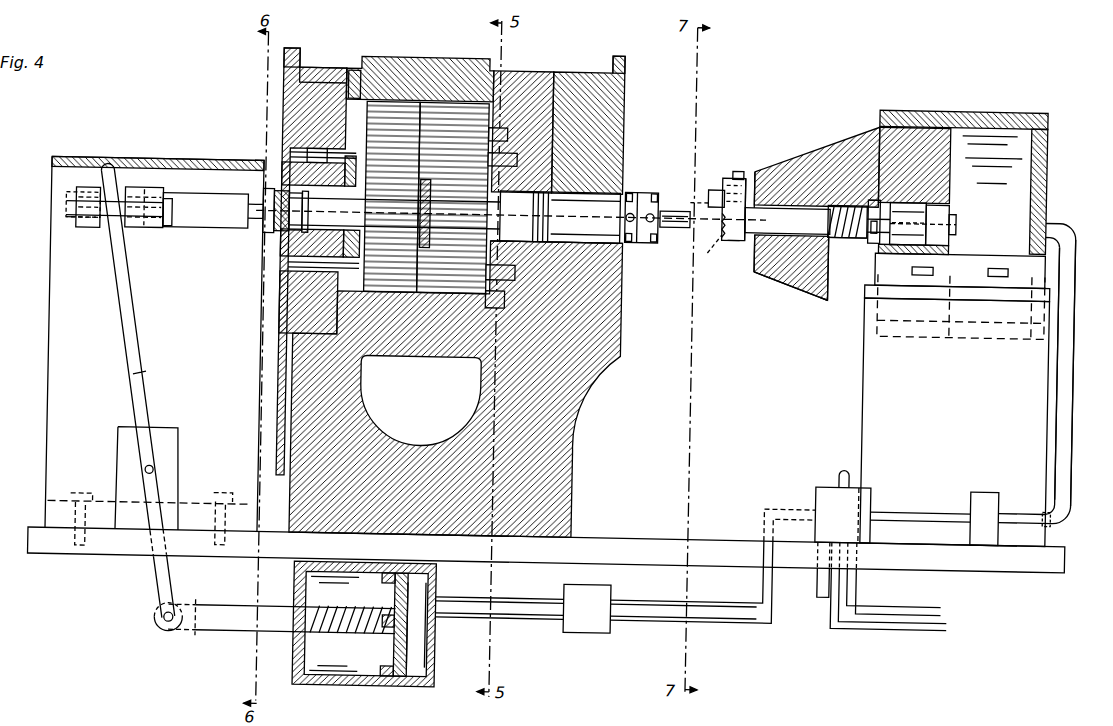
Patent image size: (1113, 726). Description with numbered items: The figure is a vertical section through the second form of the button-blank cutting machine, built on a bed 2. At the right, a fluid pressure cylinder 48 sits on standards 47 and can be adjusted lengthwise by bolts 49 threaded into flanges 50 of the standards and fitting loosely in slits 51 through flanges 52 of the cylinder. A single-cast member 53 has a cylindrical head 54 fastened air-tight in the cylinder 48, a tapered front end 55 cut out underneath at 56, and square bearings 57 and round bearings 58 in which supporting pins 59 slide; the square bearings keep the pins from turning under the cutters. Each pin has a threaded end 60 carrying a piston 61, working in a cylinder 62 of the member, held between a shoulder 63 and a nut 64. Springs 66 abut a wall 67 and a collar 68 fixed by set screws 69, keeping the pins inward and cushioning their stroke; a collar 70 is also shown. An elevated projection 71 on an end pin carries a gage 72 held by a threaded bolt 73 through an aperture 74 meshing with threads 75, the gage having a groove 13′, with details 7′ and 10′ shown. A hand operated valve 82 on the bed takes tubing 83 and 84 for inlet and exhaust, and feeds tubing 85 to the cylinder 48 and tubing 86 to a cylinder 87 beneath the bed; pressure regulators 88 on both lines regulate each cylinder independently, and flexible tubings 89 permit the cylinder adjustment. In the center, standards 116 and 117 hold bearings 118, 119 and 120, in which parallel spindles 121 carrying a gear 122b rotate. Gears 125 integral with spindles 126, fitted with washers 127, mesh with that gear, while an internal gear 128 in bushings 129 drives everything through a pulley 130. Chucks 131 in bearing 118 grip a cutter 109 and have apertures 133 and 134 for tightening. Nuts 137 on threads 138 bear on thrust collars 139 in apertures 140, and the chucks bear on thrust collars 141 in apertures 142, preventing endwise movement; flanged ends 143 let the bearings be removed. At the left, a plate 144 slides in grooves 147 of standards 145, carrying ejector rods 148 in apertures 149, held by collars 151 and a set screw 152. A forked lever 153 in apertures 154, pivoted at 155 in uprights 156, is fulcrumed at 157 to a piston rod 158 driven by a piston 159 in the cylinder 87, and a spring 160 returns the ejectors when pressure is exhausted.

The bed 2 is at (546, 550).
The standards 47 is at (955, 422).
The fluid pressure cylinder 48 is at (1040, 112).
The bolts 49 is at (907, 260).
The flanges 50 is at (960, 276).
The slits 51 is at (945, 268).
The flanges 52 is at (1040, 262).
The member 53 is at (748, 248).
The cylindrical head 54 is at (943, 135).
The front end 55 is at (790, 160).
The cut-out 56 is at (832, 285).
The square bearings 57 is at (787, 272).
The round bearings 58 is at (897, 229).
The pins 59 is at (573, 216).
The threaded end 60 is at (950, 207).
The piston 61 is at (943, 229).
The cylinder 62 is at (943, 170).
The shoulder 63 is at (928, 229).
The nut 64 is at (950, 200).
The springs 66 is at (836, 190).
The wall 67 is at (824, 258).
The collar 68 is at (868, 184).
The set screws 69 is at (846, 223).
The collar 70 is at (866, 228).
The elevated projection 71 is at (740, 170).
The gage 72 is at (707, 177).
The threaded bolt 73 is at (731, 158).
The aperture 74 is at (718, 168).
The threads 75 is at (716, 212).
The valve pin 7′ is at (729, 227).
The passage 10′ is at (706, 248).
The grooves 13′ is at (684, 190).
The hand operated valve 82 is at (843, 506).
The tubing 83 is at (903, 590).
The tubing 84 is at (894, 613).
The tubing 85 is at (917, 496).
The tubing 86 is at (722, 589).
The cylinder 87 is at (437, 640).
The pressure regulators 88 is at (781, 562).
The flexible tubings 89 is at (1070, 372).
The cutter 109 is at (676, 215).
The standard 116 is at (590, 62).
The standard 117 is at (300, 62).
The bearing 118 is at (616, 100).
The bearing 119 is at (515, 75).
The bearing 120 is at (291, 80).
The spindles 121 is at (275, 280).
The gear 122b is at (300, 190).
The gears 125 is at (385, 95).
The spindles 126 is at (283, 146).
The washers 127 is at (303, 143).
The internal gear 128 is at (425, 95).
The bushings 129 is at (345, 64).
The pulley 130 is at (446, 363).
The chucks 131 is at (493, 215).
The apertures 133 is at (620, 181).
The apertures 134 is at (648, 182).
The nuts 137 is at (258, 186).
The threads 138 is at (266, 228).
The thrust collars 139 is at (283, 226).
The apertures 140 is at (297, 227).
The thrust collars 141 is at (557, 217).
The apertures 142 is at (600, 240).
The flanged ends 143 is at (275, 50).
The plate 144 is at (80, 227).
The standards 145 is at (154, 352).
The grooves 147 is at (186, 190).
The ejector rods 148 is at (200, 214).
The apertures 149 is at (156, 224).
The collars 151 is at (60, 216).
The set screw 152 is at (60, 192).
The forked lever 153 is at (142, 354).
The apertures 154 is at (121, 188).
The pivot 155 is at (153, 467).
The uprights 156 is at (177, 431).
The fulcrum 157 is at (156, 614).
The piston rod 158 is at (282, 619).
The piston 159 is at (400, 669).
The spring 160 is at (358, 598).